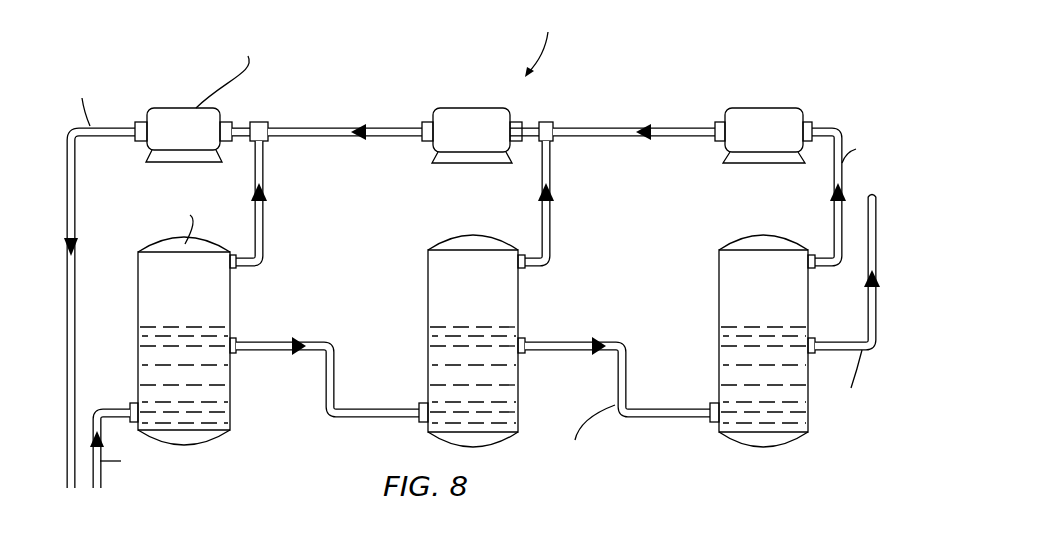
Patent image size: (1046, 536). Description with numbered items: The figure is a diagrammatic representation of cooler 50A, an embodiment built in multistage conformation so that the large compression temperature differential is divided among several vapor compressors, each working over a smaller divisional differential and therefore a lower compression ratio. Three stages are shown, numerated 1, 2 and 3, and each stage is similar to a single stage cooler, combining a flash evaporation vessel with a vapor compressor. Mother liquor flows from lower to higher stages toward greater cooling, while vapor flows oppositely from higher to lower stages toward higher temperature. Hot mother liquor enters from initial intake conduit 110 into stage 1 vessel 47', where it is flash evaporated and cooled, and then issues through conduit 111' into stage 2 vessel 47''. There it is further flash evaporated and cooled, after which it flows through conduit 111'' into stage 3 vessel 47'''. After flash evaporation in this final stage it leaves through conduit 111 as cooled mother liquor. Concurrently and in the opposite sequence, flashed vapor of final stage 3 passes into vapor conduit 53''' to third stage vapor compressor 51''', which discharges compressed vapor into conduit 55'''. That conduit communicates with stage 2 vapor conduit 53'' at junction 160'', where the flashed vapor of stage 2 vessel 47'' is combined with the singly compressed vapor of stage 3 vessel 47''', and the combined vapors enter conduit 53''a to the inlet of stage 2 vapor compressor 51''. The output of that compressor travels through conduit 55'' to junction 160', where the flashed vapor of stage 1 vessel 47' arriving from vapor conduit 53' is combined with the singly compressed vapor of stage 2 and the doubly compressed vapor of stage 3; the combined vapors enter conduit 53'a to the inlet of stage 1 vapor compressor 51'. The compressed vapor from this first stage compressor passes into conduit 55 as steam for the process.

The cooler 50A is at (660, 64).
The stage 1 vapor compressor 51' is at (157, 102).
The stage 2 vapor compressor 51'' is at (472, 116).
The third stage vapor compressor 51''' is at (763, 116).
The conduit 53'a is at (333, 127).
The conduit 53''a is at (622, 124).
The junction 160' is at (283, 117).
The junction 160'' is at (581, 117).
The conduit 55 is at (96, 290).
The conduit 55'' is at (452, 107).
The conduit 55''' is at (746, 172).
The vapor conduit 53' is at (254, 201).
The stage 2 vapor conduit 53'' is at (545, 201).
The vapor conduit 53''' is at (850, 189).
The stage 1 vessel 47' is at (159, 306).
The stage 2 vessel 47'' is at (455, 341).
The stage 3 vessel 47''' is at (745, 341).
The initial intake conduit 110 is at (104, 410).
The conduit 111' is at (327, 363).
The conduit 111'' is at (617, 385).
The conduit 111 is at (877, 308).
The stage 1 is at (246, 289).
The stage 2 is at (536, 286).
The stage 3 is at (825, 283).